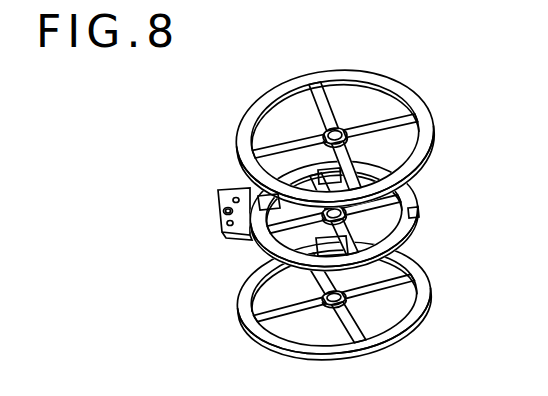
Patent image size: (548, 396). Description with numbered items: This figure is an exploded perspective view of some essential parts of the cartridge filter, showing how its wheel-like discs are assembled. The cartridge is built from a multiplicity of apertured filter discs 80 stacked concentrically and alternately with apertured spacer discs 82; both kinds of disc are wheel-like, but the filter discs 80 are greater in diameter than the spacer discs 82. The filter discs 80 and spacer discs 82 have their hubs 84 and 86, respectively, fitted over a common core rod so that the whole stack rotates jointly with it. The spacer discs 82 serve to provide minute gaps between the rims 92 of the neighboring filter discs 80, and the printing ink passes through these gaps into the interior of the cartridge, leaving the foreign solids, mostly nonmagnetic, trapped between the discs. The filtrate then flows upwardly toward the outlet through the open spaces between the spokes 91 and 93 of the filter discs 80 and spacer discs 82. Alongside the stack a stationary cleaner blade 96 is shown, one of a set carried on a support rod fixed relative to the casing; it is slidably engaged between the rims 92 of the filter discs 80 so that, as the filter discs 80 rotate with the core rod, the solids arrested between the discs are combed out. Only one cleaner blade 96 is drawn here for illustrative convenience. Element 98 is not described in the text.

The filter disc 80 is at (360, 204).
The spacer disc 82 is at (364, 215).
The hub 84 is at (352, 296).
The hub 86 is at (397, 222).
The spoke 91 is at (300, 107).
The rim 92 is at (430, 300).
The spoke 93 is at (258, 198).
The cleaner blade 96 is at (218, 208).
The tab 98 is at (412, 213).